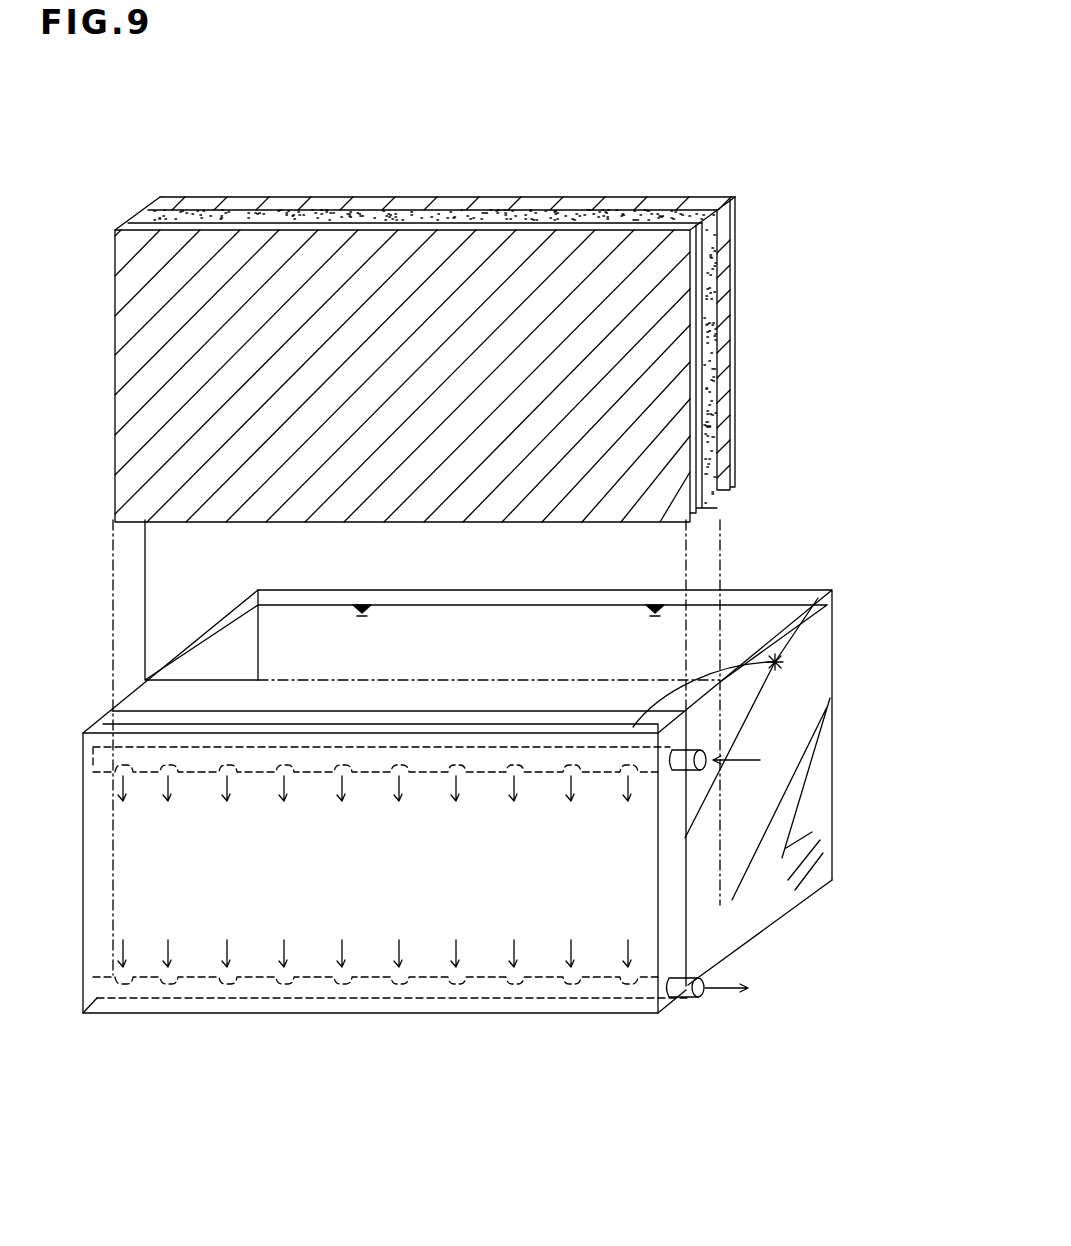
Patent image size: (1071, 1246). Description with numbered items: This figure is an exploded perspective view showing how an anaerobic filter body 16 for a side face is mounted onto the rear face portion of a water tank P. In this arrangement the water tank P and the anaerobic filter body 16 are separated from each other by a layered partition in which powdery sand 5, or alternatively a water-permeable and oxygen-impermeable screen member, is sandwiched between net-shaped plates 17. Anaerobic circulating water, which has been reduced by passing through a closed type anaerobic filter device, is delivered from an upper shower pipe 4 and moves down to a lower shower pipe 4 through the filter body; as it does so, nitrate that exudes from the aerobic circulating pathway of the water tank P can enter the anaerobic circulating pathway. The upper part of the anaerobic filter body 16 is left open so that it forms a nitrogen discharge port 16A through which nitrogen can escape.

The net-shaped plates 17 is at (118, 228).
The powdery sand 5 is at (350, 216).
The water tank P is at (831, 590).
The nitrogen discharge port 16A is at (775, 662).
The shower pipe 4 is at (670, 750).
The anaerobic filter body 16 is at (367, 943).